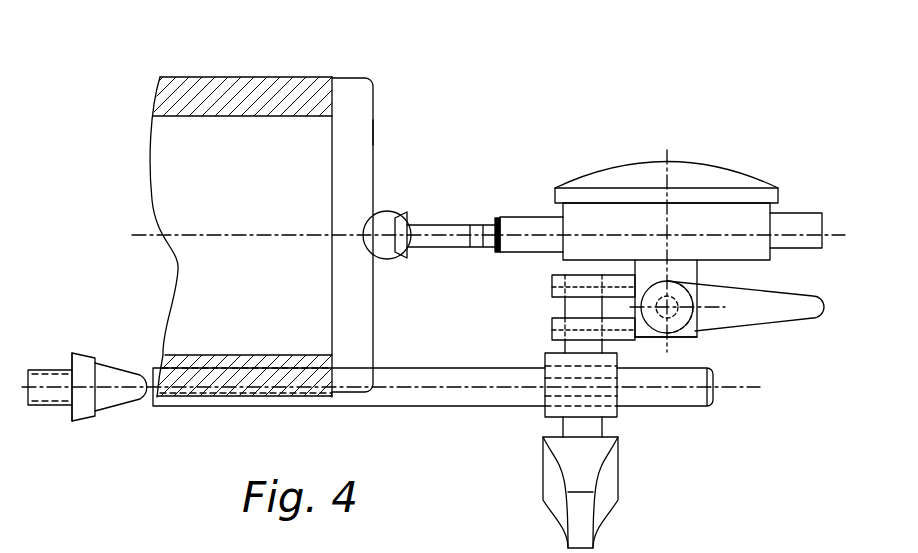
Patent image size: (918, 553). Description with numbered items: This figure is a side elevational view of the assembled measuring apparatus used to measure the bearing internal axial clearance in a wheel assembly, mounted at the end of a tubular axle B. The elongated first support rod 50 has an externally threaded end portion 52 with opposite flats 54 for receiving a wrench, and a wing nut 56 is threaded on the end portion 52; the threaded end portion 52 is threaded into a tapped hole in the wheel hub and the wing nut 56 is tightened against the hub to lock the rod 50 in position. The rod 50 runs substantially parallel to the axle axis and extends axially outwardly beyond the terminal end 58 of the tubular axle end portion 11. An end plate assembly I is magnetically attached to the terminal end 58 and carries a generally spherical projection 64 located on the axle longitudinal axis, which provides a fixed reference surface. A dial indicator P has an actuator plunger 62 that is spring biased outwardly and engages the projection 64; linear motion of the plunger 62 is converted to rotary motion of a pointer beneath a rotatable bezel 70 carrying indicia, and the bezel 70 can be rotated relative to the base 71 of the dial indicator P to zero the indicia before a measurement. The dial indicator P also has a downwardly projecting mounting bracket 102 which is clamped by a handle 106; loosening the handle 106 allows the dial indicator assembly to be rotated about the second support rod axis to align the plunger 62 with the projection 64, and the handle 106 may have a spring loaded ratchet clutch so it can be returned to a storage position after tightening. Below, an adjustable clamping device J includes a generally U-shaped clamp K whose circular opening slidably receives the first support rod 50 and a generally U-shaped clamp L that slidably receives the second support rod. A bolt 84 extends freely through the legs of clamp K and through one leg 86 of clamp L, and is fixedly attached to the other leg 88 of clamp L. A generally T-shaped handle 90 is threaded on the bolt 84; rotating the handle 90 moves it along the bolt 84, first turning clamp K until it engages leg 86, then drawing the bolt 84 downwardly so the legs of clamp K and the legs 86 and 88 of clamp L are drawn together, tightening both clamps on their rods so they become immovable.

The tubular axle end portion 11 is at (213, 77).
The tubular axle B is at (150, 188).
The terminal end 58 is at (334, 103).
The end plate assembly I is at (376, 132).
The spherical projection 64 is at (386, 216).
The actuator plunger 62 is at (440, 226).
The dial indicator P is at (763, 180).
The rotatable bezel 70 is at (620, 172).
The base 71 is at (750, 218).
The mounting bracket 102 is at (688, 272).
The handle 106 is at (787, 318).
The U-shaped clamp L is at (637, 345).
The leg 88 is at (556, 290).
The leg 86 is at (550, 340).
The adjustable clamping device J is at (540, 326).
The first support rod 50 is at (412, 406).
The U-shaped clamp K is at (545, 418).
The bolt 84 is at (594, 428).
The T-shaped handle 90 is at (612, 485).
The threaded end portion 52 is at (48, 378).
The flats 54 is at (148, 372).
The wing nut 56 is at (83, 423).